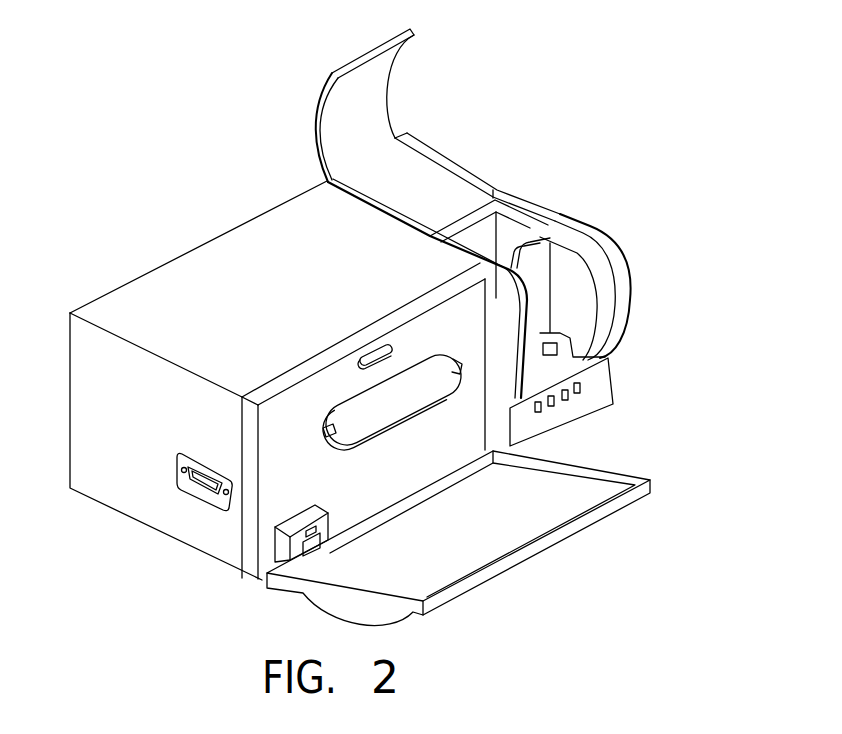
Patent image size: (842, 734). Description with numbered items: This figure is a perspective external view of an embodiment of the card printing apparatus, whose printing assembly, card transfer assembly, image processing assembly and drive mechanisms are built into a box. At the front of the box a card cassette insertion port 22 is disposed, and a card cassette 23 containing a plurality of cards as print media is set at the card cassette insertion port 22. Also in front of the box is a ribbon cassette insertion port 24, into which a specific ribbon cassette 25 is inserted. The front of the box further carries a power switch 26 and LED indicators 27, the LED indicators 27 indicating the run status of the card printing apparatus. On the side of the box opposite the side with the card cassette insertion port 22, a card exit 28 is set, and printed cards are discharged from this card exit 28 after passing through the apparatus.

The card cassette insertion port 22 is at (575, 281).
The card cassette 23 is at (543, 243).
The ribbon cassette insertion port 24 is at (313, 451).
The ribbon cassette 25 is at (417, 428).
The power switch 26 is at (322, 550).
The LED indicators 27 is at (580, 404).
The card exit 28 is at (204, 490).